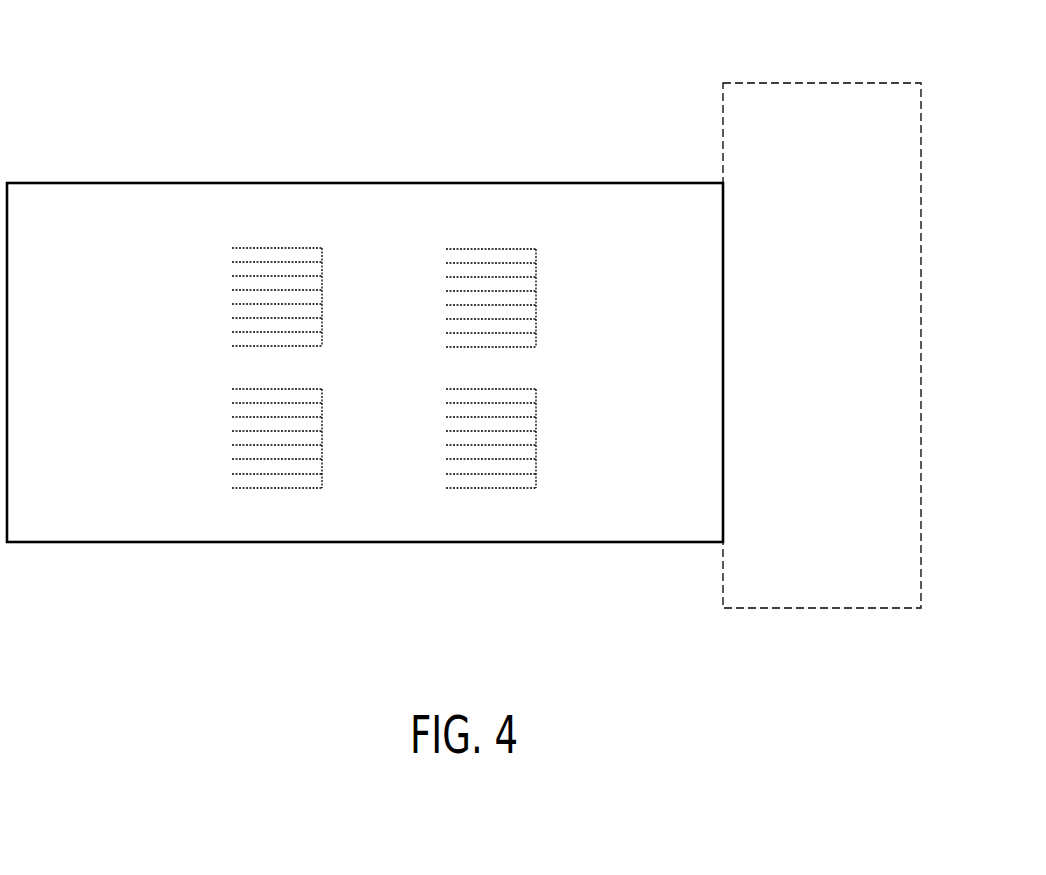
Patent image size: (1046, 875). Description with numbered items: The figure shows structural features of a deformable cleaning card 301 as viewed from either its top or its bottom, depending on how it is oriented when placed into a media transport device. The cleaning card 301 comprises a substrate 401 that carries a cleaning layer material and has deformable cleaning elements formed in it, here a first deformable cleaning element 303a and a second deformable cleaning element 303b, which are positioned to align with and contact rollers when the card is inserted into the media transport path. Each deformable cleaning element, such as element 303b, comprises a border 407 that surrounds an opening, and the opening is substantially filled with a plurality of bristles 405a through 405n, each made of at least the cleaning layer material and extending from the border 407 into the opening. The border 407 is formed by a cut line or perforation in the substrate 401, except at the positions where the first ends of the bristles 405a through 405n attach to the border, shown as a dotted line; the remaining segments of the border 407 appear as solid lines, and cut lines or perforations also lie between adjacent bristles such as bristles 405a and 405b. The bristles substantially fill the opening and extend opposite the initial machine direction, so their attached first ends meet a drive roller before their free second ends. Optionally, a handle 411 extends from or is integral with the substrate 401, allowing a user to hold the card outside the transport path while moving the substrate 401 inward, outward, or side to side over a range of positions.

The deformable cleaning card 301 is at (112, 110).
The first deformable cleaning element 303a is at (489, 210).
The second deformable cleaning element 303b is at (272, 210).
The substrate 401 is at (147, 530).
The bristle 405a is at (322, 254).
The bristle 405b is at (319, 272).
The bristle 405n is at (318, 342).
The border 407 is at (322, 315).
The handle 411 is at (830, 93).